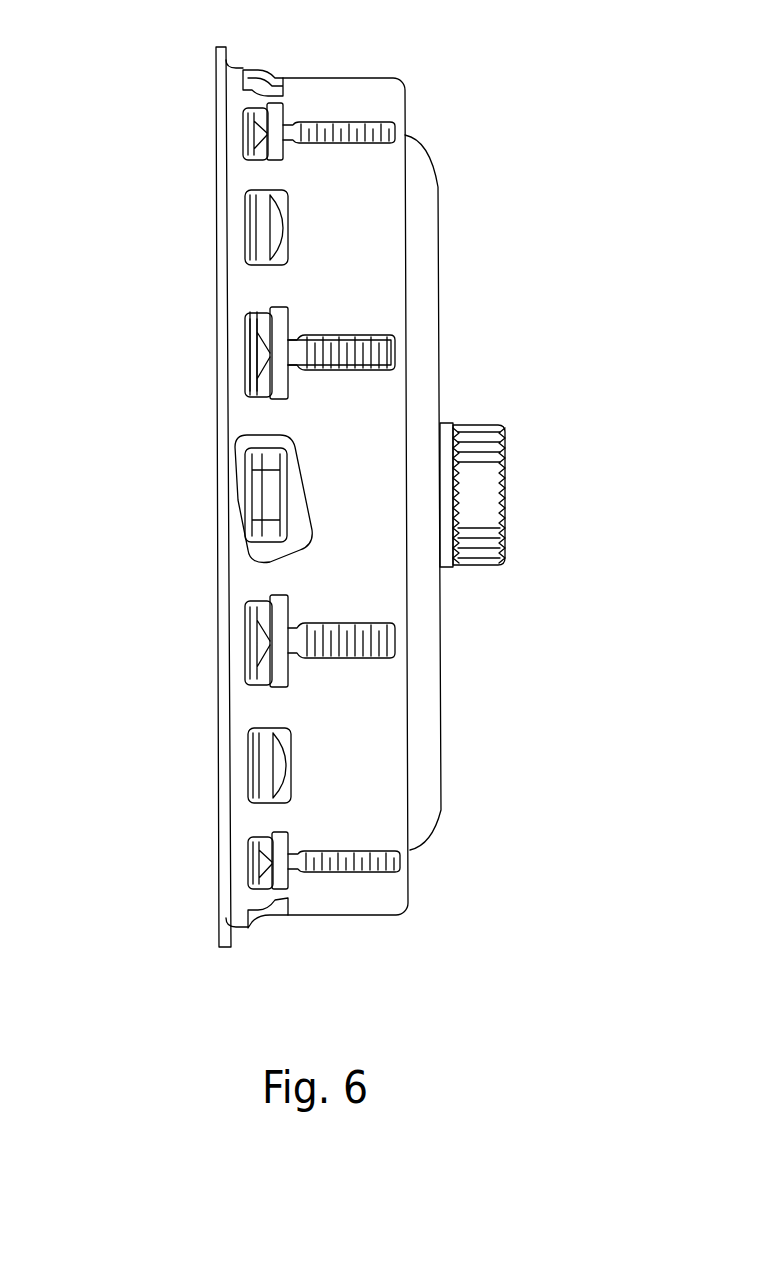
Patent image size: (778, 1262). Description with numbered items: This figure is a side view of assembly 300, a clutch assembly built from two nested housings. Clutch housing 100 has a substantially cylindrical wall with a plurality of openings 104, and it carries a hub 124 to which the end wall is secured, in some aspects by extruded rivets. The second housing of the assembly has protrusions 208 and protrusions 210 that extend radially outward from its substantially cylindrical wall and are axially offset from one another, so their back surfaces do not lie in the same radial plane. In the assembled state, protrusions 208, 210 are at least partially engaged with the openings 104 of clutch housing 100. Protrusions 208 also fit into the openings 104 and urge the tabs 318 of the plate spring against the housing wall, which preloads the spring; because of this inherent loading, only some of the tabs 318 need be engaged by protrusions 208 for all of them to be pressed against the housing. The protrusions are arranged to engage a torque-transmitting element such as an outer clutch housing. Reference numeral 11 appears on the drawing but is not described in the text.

The clutch housing 100 is at (377, 77).
The openings 104 is at (292, 243).
The tabs 318 is at (250, 327).
The protrusions 210 is at (267, 372).
The protrusions 208 is at (260, 520).
The mounting plate 11 is at (235, 520).
The hub 124 is at (482, 567).
The assembly 300 is at (482, 830).